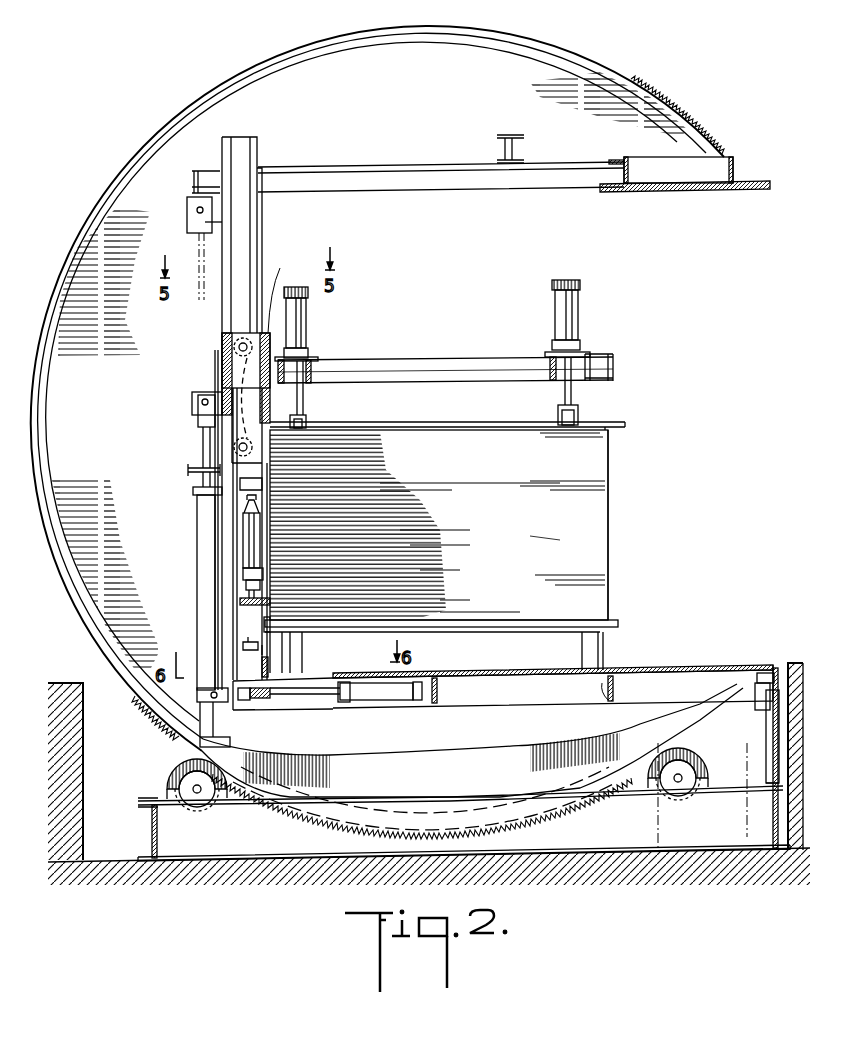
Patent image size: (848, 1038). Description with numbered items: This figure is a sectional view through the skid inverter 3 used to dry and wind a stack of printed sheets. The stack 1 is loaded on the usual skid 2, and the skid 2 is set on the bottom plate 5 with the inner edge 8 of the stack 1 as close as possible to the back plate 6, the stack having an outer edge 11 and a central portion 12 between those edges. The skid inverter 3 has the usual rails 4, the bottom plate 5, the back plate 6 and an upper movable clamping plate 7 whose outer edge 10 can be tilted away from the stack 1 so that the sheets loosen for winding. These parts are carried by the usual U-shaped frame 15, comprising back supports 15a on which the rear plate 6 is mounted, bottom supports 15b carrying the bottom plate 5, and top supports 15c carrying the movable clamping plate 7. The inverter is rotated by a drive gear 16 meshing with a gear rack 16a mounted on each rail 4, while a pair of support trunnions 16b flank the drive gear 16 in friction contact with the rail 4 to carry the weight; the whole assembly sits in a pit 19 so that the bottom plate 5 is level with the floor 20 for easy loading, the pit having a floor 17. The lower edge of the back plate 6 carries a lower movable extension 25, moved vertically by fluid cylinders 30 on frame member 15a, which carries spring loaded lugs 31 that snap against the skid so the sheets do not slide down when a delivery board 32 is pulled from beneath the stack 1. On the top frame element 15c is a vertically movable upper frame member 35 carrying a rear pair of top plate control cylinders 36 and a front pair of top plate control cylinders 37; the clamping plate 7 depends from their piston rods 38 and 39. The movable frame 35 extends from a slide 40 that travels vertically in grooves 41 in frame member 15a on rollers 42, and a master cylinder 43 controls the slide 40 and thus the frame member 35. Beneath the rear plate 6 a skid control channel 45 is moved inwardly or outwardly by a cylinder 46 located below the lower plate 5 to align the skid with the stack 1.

The stack of printed sheets 1 is at (620, 495).
The skid 2 is at (605, 646).
The skid inverter 3 is at (702, 118).
The rails 4 is at (590, 65).
The bottom plate 5 is at (703, 668).
The back plate 6 is at (262, 240).
The upper movable clamping plate 7 is at (514, 424).
The inner edge 8 is at (272, 493).
The outer edge 10 is at (627, 425).
The outer edge 11 is at (609, 548).
The central portion 12 is at (515, 548).
The U-shaped frame 15 is at (432, 160).
The back supports 15a is at (222, 283).
The bottom supports 15b is at (606, 692).
The top supports 15c is at (586, 175).
The drive gear 16 is at (170, 786).
The gear rack 16a is at (661, 96).
The support trunnions 16b is at (182, 773).
The pit floor 17 is at (609, 838).
The pit 19 is at (788, 727).
The floor 20 is at (792, 662).
The lower movable extension 25 is at (270, 592).
The fluid cylinders 30 is at (250, 538).
The spring loaded lugs 31 is at (264, 624).
The delivery board 32 is at (600, 618).
The upper frame member 35 is at (497, 366).
The rear top plate control cylinders 36 is at (308, 324).
The front top plate control cylinders 37 is at (578, 310).
The piston rods 38 is at (306, 401).
The piston rods 39 is at (574, 397).
The slide 40 is at (281, 298).
The grooves 41 is at (243, 152).
The rollers 42 is at (222, 358).
The master cylinder 43 is at (200, 497).
The skid control channel 45 is at (257, 665).
The cylinder 46 is at (384, 700).